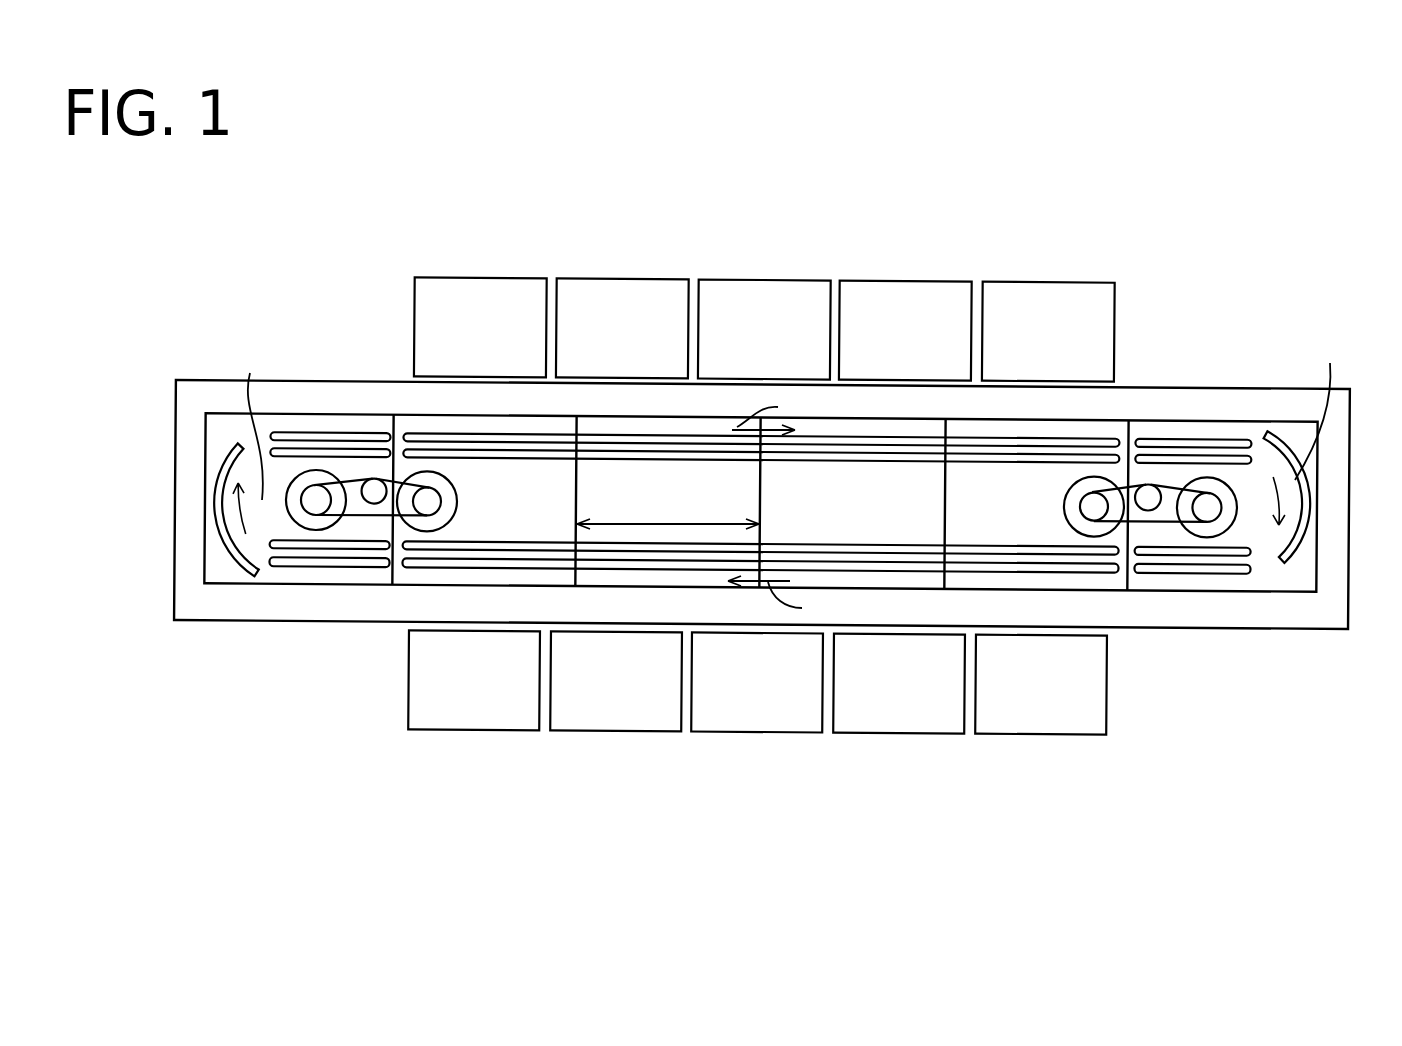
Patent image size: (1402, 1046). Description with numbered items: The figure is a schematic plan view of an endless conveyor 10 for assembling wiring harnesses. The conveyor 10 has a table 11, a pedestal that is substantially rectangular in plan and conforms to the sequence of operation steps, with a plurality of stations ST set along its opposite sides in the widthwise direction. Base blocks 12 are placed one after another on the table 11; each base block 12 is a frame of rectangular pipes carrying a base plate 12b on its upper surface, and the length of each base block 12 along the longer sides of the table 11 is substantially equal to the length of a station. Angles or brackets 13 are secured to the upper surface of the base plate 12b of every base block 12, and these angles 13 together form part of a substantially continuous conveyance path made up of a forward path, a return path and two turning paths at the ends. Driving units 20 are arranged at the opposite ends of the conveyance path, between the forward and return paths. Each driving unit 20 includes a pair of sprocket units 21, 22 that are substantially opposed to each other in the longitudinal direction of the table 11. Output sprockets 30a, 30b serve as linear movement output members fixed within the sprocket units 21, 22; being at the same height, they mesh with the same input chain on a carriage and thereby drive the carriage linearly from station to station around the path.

The endless conveyor 10 is at (1158, 180).
The table 11 is at (1210, 610).
The base block 12 is at (412, 582).
The base plate 12b is at (1003, 525).
The angle or bracket 13 is at (232, 560).
The driving unit 20 is at (800, 463).
The sprocket unit 21 is at (425, 457).
The sprocket unit 22 is at (327, 464).
The output sprocket 30a is at (447, 505).
The output sprocket 30b is at (313, 520).